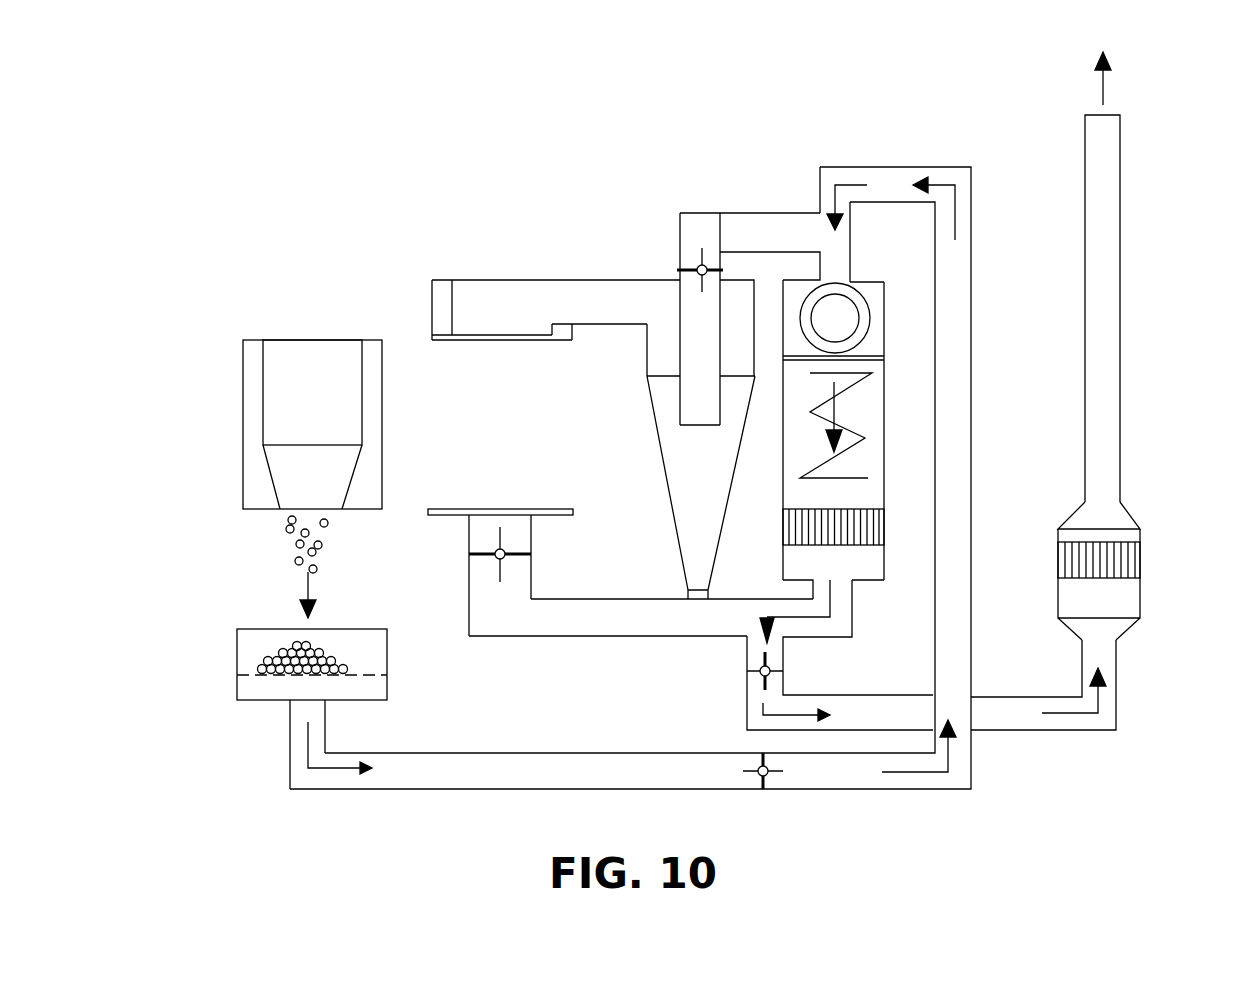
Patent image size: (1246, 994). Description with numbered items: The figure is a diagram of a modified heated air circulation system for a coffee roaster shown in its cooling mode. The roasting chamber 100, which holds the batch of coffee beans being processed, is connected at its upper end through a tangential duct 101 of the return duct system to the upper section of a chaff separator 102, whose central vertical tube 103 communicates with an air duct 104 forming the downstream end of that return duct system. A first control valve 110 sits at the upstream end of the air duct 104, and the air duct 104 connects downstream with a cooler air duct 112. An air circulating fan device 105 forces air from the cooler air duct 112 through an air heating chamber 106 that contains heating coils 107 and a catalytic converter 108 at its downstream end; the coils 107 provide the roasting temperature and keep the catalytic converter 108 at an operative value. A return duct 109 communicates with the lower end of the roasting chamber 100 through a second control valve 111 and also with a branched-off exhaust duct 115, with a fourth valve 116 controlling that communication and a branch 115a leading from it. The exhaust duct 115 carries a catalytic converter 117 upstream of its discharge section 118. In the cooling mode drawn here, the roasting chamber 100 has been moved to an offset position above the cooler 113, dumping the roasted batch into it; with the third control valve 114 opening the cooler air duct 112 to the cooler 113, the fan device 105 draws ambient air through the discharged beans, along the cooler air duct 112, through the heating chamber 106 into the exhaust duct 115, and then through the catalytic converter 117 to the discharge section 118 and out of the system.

The roasting chamber 100 is at (331, 410).
The tangential duct 101 is at (585, 292).
The chaff separator 102 is at (638, 438).
The central vertical tube 103 is at (693, 410).
The air duct 104 is at (752, 223).
The air circulating fan device 105 is at (840, 315).
The air heating chamber 106 is at (885, 392).
The coils 107 is at (866, 437).
The catalytic converter 108 is at (885, 530).
The return duct 109 is at (575, 622).
The first control valve 110 is at (700, 263).
The second control valve 111 is at (505, 558).
The cooler air duct 112 is at (883, 178).
The cooler 113 is at (237, 648).
The third control valve 114 is at (768, 778).
The exhaust duct 115 is at (862, 710).
The branch pipe 115a is at (790, 655).
The fourth valve 116 is at (758, 678).
The catalytic converter 117 is at (1142, 565).
The discharge section 118 is at (1122, 318).